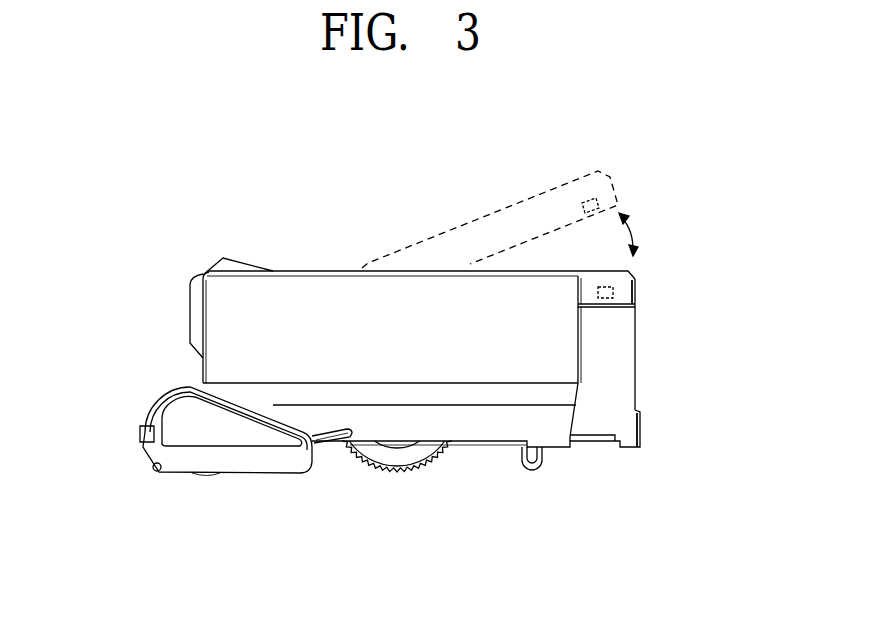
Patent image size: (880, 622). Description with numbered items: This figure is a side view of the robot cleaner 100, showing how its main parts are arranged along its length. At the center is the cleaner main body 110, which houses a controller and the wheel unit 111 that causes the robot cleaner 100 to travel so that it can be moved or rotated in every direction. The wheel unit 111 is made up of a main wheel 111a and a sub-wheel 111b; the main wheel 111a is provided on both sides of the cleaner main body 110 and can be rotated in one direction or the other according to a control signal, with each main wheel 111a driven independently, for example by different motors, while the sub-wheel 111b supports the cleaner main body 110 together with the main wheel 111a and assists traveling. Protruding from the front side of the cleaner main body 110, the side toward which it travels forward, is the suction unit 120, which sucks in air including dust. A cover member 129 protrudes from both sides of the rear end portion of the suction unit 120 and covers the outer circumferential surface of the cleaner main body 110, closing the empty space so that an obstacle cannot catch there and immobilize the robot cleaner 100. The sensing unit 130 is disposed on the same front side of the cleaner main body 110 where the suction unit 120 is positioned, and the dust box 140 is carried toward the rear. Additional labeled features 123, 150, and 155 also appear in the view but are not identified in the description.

The robot cleaner 100 is at (225, 170).
The cleaner main body 110 is at (350, 302).
The wheel unit 111 is at (402, 543).
The main wheel 111a is at (418, 458).
The sub-wheel 111b is at (527, 471).
The suction unit 120 is at (245, 432).
The sensor 123 is at (157, 471).
The cover member 129 is at (333, 441).
The sensing unit 130 is at (217, 266).
The dust box 140 is at (610, 358).
The cover 150 is at (636, 278).
The button 155 is at (600, 285).